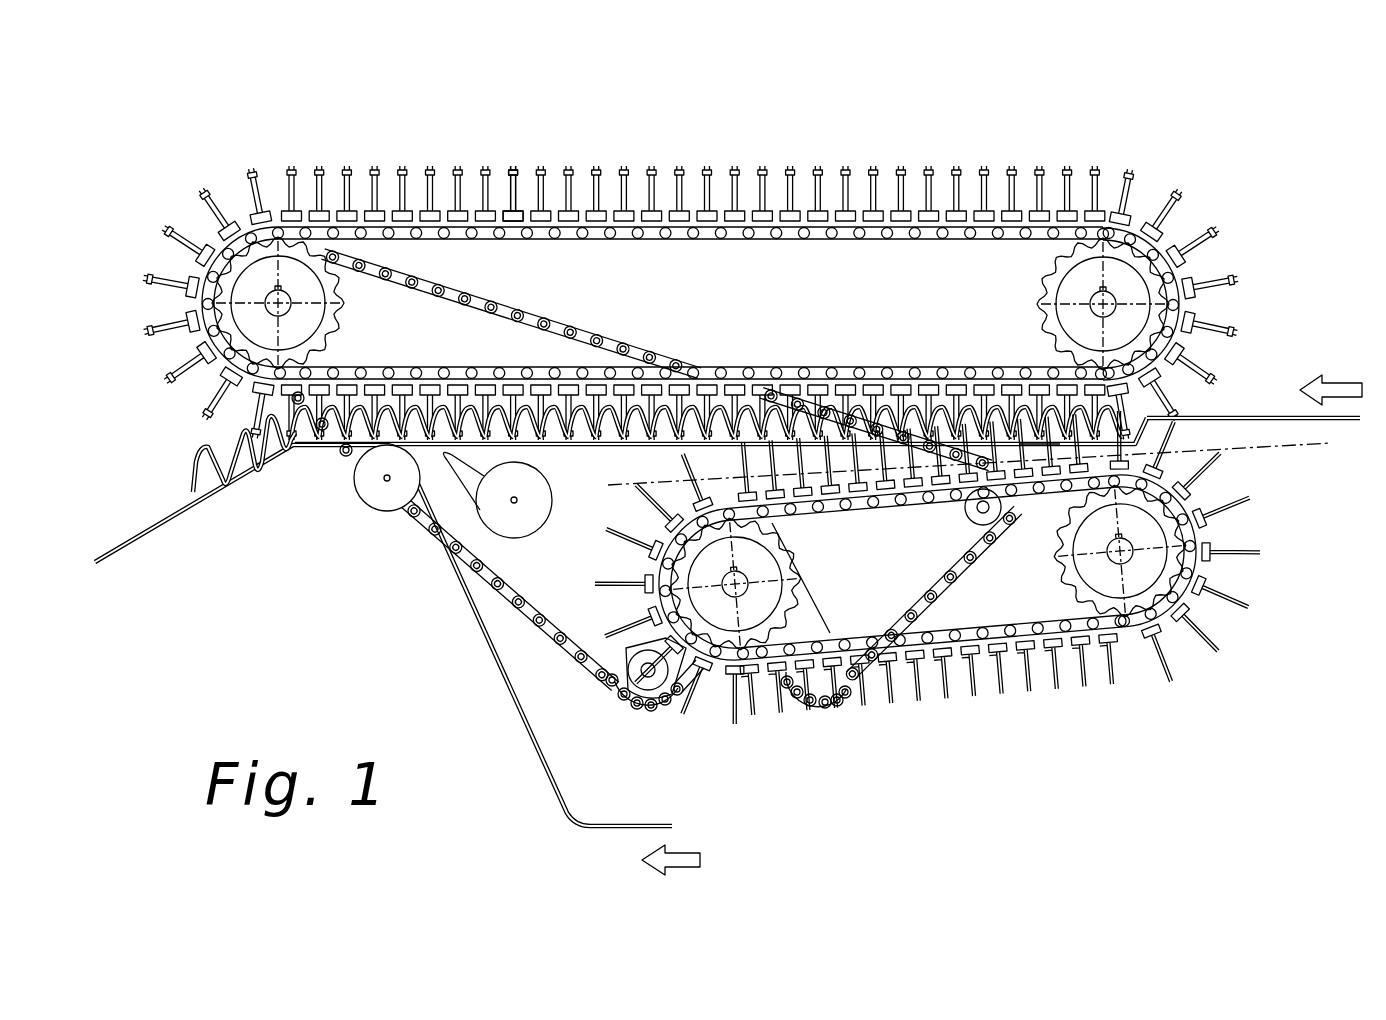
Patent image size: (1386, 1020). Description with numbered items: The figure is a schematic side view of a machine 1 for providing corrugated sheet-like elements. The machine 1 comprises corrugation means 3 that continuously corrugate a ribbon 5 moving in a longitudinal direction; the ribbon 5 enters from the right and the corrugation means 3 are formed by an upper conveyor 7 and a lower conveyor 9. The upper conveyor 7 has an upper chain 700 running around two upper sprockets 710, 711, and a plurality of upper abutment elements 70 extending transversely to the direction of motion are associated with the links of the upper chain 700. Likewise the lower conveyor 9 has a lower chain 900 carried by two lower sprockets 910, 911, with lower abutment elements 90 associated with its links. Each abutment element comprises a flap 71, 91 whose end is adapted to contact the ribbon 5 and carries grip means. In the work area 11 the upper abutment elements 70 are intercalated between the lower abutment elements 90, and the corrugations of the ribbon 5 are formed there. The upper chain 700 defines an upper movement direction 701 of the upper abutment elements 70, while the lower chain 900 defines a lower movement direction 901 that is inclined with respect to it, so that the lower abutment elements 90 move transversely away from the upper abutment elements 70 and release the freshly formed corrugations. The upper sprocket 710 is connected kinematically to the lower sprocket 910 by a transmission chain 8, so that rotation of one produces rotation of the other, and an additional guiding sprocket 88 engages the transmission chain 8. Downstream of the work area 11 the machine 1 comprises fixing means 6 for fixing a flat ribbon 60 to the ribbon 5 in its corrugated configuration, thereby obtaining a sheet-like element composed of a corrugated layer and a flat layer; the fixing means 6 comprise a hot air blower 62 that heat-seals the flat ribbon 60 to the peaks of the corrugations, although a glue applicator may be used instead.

The machine for providing corrugated sheet-like elements 1 is at (158, 166).
The upper conveyor 7 is at (881, 160).
The upper chain 700 is at (517, 218).
The upper sprocket 710 is at (214, 277).
The upper sprocket 711 is at (1070, 265).
The upper abutment elements 70 is at (1163, 188).
The flap 71 is at (1178, 240).
The transmission chain 8 is at (588, 323).
The upper movement direction 701 is at (597, 447).
The flat ribbon 60 is at (300, 448).
The ribbon 5 is at (195, 462).
The corrugation means 3 is at (1252, 398).
The lower movement direction 901 is at (612, 518).
The fixing means 6 is at (450, 484).
The hot air blower 62 is at (500, 510).
The guiding sprocket 88 is at (962, 515).
The work area 11 is at (1037, 458).
The lower conveyor 9 is at (985, 710).
The lower chain 900 is at (1060, 625).
The lower sprocket 910 is at (735, 640).
The lower sprocket 911 is at (1140, 600).
The lower abutment elements 90 is at (1194, 457).
The flap 91 is at (1170, 460).